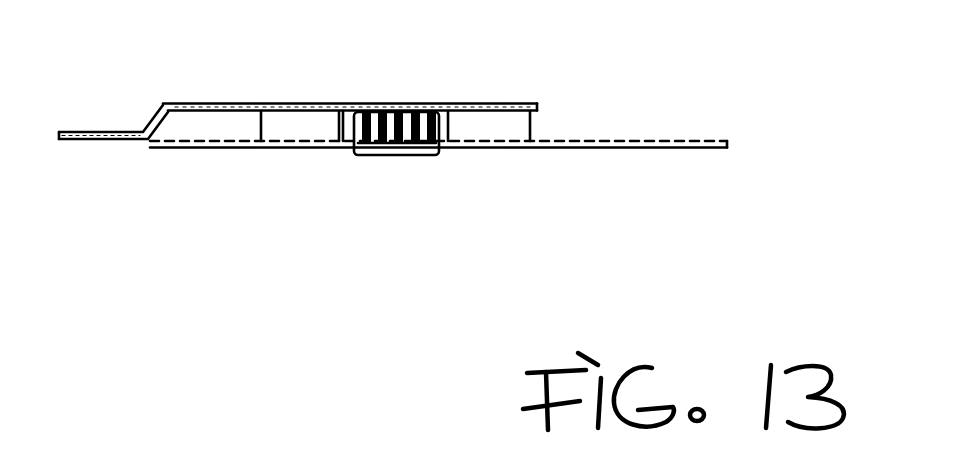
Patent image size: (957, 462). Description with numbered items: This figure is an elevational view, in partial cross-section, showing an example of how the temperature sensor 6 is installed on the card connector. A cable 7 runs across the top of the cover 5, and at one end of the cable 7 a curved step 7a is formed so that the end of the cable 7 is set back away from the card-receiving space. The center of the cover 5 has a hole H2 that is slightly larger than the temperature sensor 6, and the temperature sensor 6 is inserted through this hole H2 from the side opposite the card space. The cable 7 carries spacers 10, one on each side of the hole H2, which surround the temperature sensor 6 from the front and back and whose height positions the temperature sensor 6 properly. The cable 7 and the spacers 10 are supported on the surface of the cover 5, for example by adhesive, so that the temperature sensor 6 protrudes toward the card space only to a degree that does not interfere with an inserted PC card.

The step 7a is at (113, 93).
The cable 7 is at (350, 56).
The spacer 10 is at (395, 83).
The cover 5 is at (440, 102).
The temperature sensor 6 is at (396, 182).
The hole H2 is at (470, 205).